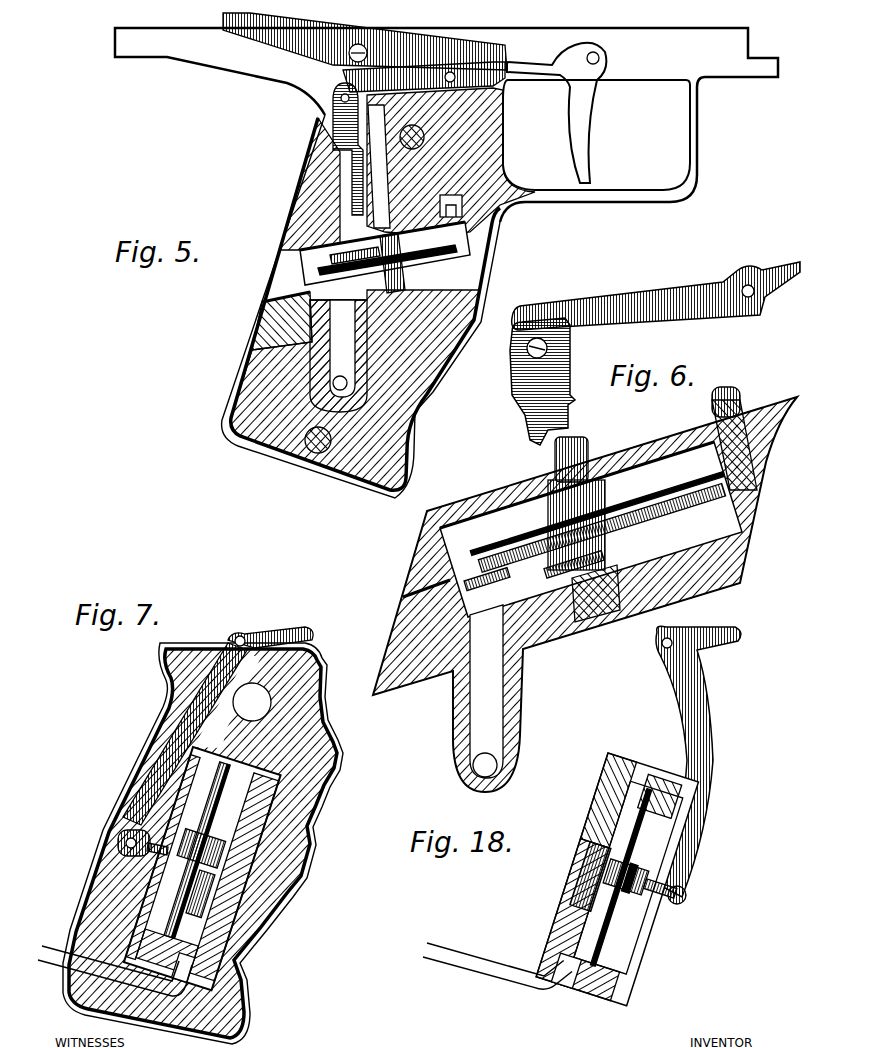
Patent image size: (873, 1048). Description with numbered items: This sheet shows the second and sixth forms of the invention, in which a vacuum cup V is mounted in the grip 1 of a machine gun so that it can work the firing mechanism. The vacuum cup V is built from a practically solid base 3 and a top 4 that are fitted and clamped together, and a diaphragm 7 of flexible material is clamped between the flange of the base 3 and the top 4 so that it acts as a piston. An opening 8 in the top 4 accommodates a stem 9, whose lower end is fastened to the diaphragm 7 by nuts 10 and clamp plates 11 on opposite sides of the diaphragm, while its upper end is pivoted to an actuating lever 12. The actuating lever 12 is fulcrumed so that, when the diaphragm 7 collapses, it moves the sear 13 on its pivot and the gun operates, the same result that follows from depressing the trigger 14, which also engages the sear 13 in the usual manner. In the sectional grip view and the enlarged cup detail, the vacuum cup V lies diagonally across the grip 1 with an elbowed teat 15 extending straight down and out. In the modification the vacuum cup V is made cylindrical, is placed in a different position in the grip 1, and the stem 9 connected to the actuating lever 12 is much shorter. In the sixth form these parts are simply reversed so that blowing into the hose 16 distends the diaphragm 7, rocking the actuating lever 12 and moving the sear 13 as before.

In FIG. 5, the grip 1 is at (470, 280).
In FIG. 7, the grip 1 is at (276, 945).
In FIG. 5, the base 3 is at (290, 322).
In FIG. 6, the base 3 is at (416, 690).
In FIG. 7, the base 3 is at (258, 893).
In FIG. 18, the base 3 is at (582, 868).
In FIG. 5, the top 4 is at (300, 270).
In FIG. 6, the top 4 is at (660, 445).
In FIG. 7, the top 4 is at (154, 853).
In FIG. 18, the top 4 is at (612, 925).
In FIG. 5, the diaphragm 7 is at (387, 270).
In FIG. 6, the diaphragm 7 is at (594, 501).
In FIG. 7, the diaphragm 7 is at (188, 847).
In FIG. 18, the diaphragm 7 is at (602, 871).
In FIG. 5, the opening 8 is at (438, 208).
In FIG. 6, the opening 8 is at (590, 455).
In FIG. 5, the stem 9 is at (340, 135).
In FIG. 6, the stem 9 is at (552, 430).
In FIG. 7, the stem 9 is at (117, 843).
In FIG. 18, the stem 9 is at (674, 904).
In FIG. 5, the nuts 10 is at (400, 260).
In FIG. 6, the nuts 10 is at (575, 565).
In FIG. 7, the nuts 10 is at (207, 838).
In FIG. 18, the nuts 10 is at (616, 867).
In FIG. 5, the clamp plates 11 is at (355, 271).
In FIG. 6, the clamp plates 11 is at (540, 590).
In FIG. 7, the clamp plates 11 is at (182, 890).
In FIG. 5, the actuating lever 12 is at (345, 82).
In FIG. 6, the actuating lever 12 is at (615, 306).
In FIG. 7, the actuating lever 12 is at (152, 752).
In FIG. 18, the actuating lever 12 is at (704, 712).
In FIG. 5, the sear 13 is at (285, 40).
In FIG. 5, the trigger 14 is at (585, 100).
In FIG. 5, the elbowed teat 15 is at (320, 370).
In FIG. 6, the elbowed teat 15 is at (518, 700).
In FIG. 7, the hose 16 is at (46, 948).
In FIG. 18, the hose 16 is at (430, 942).
In FIG. 5, the vacuum cup V is at (300, 258).
In FIG. 6, the vacuum cup V is at (446, 512).